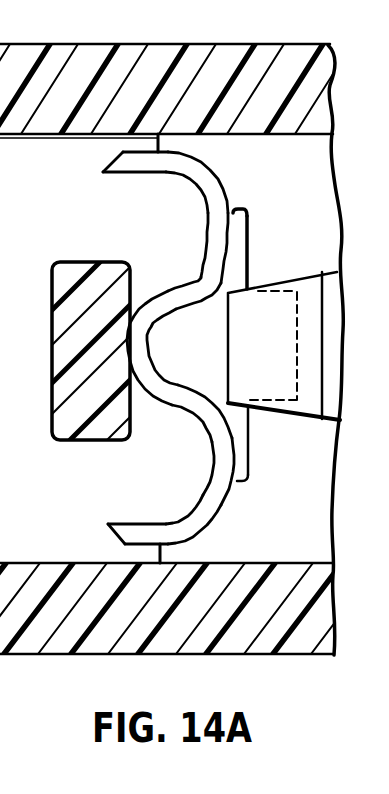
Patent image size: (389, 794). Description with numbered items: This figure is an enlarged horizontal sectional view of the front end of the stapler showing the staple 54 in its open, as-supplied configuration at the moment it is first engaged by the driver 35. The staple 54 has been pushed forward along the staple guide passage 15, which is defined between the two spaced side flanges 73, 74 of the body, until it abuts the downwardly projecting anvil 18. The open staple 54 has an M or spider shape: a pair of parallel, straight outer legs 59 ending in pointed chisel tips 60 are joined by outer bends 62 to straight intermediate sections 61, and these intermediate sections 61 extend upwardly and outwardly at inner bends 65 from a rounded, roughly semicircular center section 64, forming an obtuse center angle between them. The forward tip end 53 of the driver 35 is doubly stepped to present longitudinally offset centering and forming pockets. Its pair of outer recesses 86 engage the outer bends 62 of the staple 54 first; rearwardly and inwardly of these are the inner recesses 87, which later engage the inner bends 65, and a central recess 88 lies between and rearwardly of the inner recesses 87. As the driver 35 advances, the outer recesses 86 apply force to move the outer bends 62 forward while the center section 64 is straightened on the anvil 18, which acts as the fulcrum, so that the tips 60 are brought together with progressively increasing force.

The staple guide passage 15 is at (72, 136).
The anvil 18 is at (90, 368).
The driver 35 is at (314, 222).
The tip end of the driver 53 is at (183, 418).
The staple 54 is at (269, 328).
The outer legs 59 is at (137, 163).
The chisel tips 60 is at (112, 163).
The intermediate sections 61 is at (217, 245).
The outer bends 62 is at (205, 172).
The center section 64 is at (143, 345).
The inner bends 65 is at (203, 287).
The side flange 73 is at (302, 55).
The side flange 74 is at (45, 645).
The outer recesses 86 is at (217, 185).
The inner recesses 87 is at (247, 259).
The central recess 88 is at (318, 336).